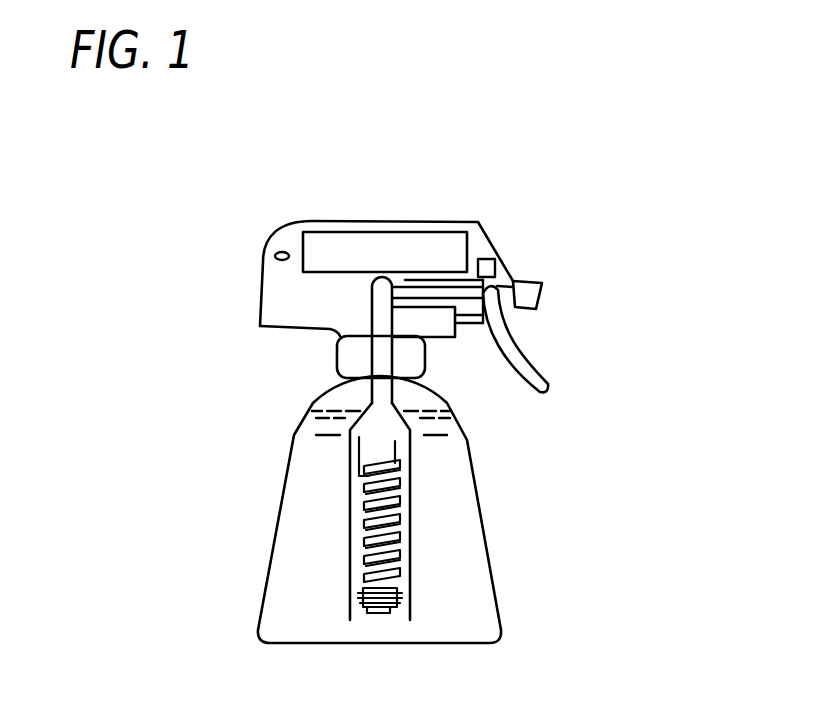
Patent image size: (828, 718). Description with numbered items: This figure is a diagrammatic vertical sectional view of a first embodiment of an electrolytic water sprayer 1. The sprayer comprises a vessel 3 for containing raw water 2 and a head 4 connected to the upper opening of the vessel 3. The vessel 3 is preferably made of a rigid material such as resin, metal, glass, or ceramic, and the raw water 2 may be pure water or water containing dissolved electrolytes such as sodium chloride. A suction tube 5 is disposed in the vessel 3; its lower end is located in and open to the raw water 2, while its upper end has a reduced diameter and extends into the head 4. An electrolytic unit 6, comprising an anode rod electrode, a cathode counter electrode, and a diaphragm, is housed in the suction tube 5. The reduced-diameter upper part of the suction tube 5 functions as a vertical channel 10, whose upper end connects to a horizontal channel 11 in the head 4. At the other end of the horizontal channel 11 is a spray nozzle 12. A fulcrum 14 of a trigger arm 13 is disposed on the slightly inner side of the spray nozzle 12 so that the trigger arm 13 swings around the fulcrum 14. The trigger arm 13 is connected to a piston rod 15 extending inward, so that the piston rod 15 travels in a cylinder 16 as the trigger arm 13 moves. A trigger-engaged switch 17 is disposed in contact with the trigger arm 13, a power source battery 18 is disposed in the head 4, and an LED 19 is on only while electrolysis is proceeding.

The electrolytic water sprayer 1 is at (609, 398).
The raw water 2 is at (477, 578).
The vessel 3 is at (497, 547).
The head 4 is at (362, 222).
The suction tube 5 is at (411, 452).
The electrolytic unit 6 is at (358, 513).
The vertical channel 10 is at (378, 314).
The horizontal channel 11 is at (423, 322).
The spray nozzle 12 is at (540, 296).
The trigger arm 13 is at (548, 393).
The fulcrum 14 is at (503, 275).
The piston rod 15 is at (466, 326).
The cylinder 16 is at (380, 295).
The trigger-engaged switch 17 is at (488, 268).
The power source battery 18 is at (390, 257).
The LED 19 is at (272, 256).